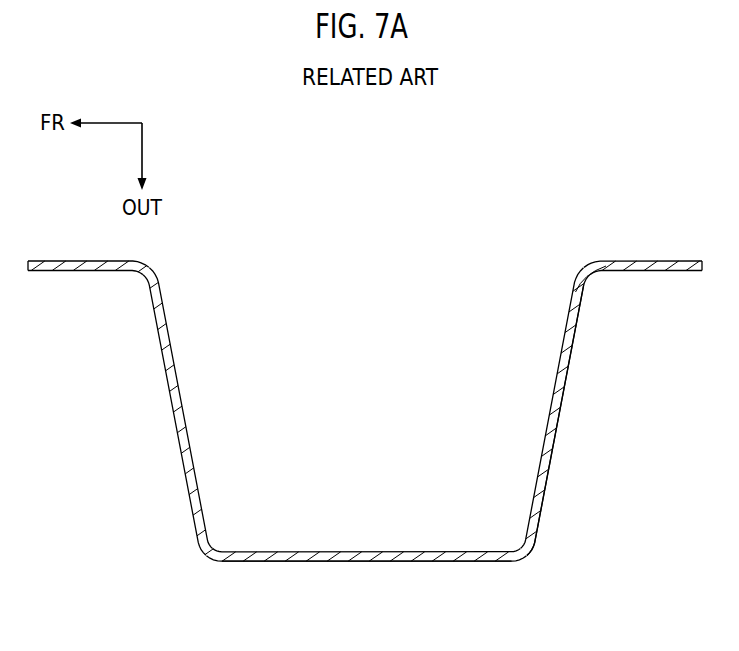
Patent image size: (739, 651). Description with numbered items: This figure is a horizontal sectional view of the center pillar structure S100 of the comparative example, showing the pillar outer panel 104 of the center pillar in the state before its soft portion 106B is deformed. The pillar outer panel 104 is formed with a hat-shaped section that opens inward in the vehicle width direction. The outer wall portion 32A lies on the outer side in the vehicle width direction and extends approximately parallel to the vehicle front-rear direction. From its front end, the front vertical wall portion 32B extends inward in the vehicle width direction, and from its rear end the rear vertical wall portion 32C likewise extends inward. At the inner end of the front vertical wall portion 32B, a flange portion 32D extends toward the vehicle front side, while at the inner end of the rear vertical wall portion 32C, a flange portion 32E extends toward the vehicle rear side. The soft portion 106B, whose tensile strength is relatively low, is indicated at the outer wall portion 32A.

The flange portion 32D is at (68, 271).
The front vertical wall portion 32B is at (175, 422).
The outer wall portion 32A is at (443, 562).
The rear vertical wall portion 32C is at (561, 403).
The flange portion 32E is at (650, 271).
The pillar outer panel 104 is at (557, 445).
The center pillar structure S100 is at (560, 556).
The soft portion 106B is at (355, 563).